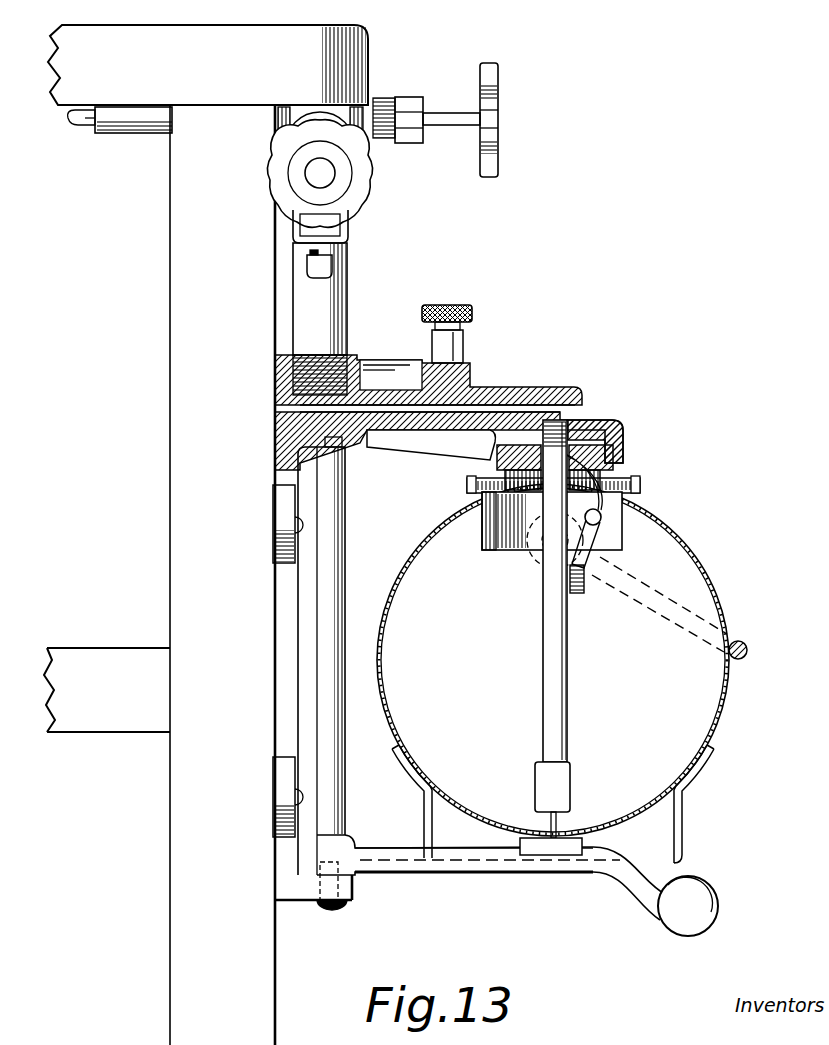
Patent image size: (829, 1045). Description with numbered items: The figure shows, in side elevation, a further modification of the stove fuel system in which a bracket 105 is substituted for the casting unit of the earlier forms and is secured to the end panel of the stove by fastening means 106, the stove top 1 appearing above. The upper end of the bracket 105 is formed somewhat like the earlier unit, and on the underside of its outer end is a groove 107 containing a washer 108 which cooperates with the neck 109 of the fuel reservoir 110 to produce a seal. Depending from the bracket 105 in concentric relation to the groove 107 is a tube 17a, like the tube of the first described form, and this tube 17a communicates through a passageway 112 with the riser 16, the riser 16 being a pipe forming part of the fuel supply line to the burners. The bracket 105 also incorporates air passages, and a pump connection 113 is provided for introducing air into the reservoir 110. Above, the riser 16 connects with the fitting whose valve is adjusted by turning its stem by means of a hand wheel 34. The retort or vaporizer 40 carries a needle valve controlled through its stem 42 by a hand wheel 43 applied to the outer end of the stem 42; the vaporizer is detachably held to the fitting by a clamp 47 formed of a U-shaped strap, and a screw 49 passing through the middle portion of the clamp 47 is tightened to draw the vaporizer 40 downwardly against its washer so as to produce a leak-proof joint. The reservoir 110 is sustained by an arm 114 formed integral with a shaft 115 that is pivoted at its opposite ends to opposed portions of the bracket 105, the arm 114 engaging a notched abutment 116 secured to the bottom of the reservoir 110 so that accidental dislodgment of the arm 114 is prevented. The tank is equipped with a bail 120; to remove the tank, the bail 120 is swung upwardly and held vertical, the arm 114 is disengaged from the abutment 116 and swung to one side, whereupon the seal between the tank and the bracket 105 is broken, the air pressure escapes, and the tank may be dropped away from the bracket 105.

The top 1 is at (208, 38).
The retort or vaporizer 40 is at (159, 575).
The stem 42 is at (453, 110).
The hand wheel 43 is at (498, 127).
The hand wheel 34 is at (336, 173).
The clamp 47 is at (350, 225).
The screw 49 is at (332, 265).
The riser 16 is at (347, 298).
The pump connection 113 is at (462, 312).
The passageway 112 is at (520, 402).
The groove 107 is at (600, 432).
The washer 108 is at (622, 443).
The neck 109 is at (616, 467).
The bracket 105 is at (440, 445).
The fastening means 106 is at (298, 525).
The shaft 115 is at (345, 557).
The reservoir 110 is at (688, 560).
The bail 120 is at (744, 641).
The tube 17a is at (567, 672).
The arm 114 is at (488, 874).
The abutment 116 is at (553, 856).